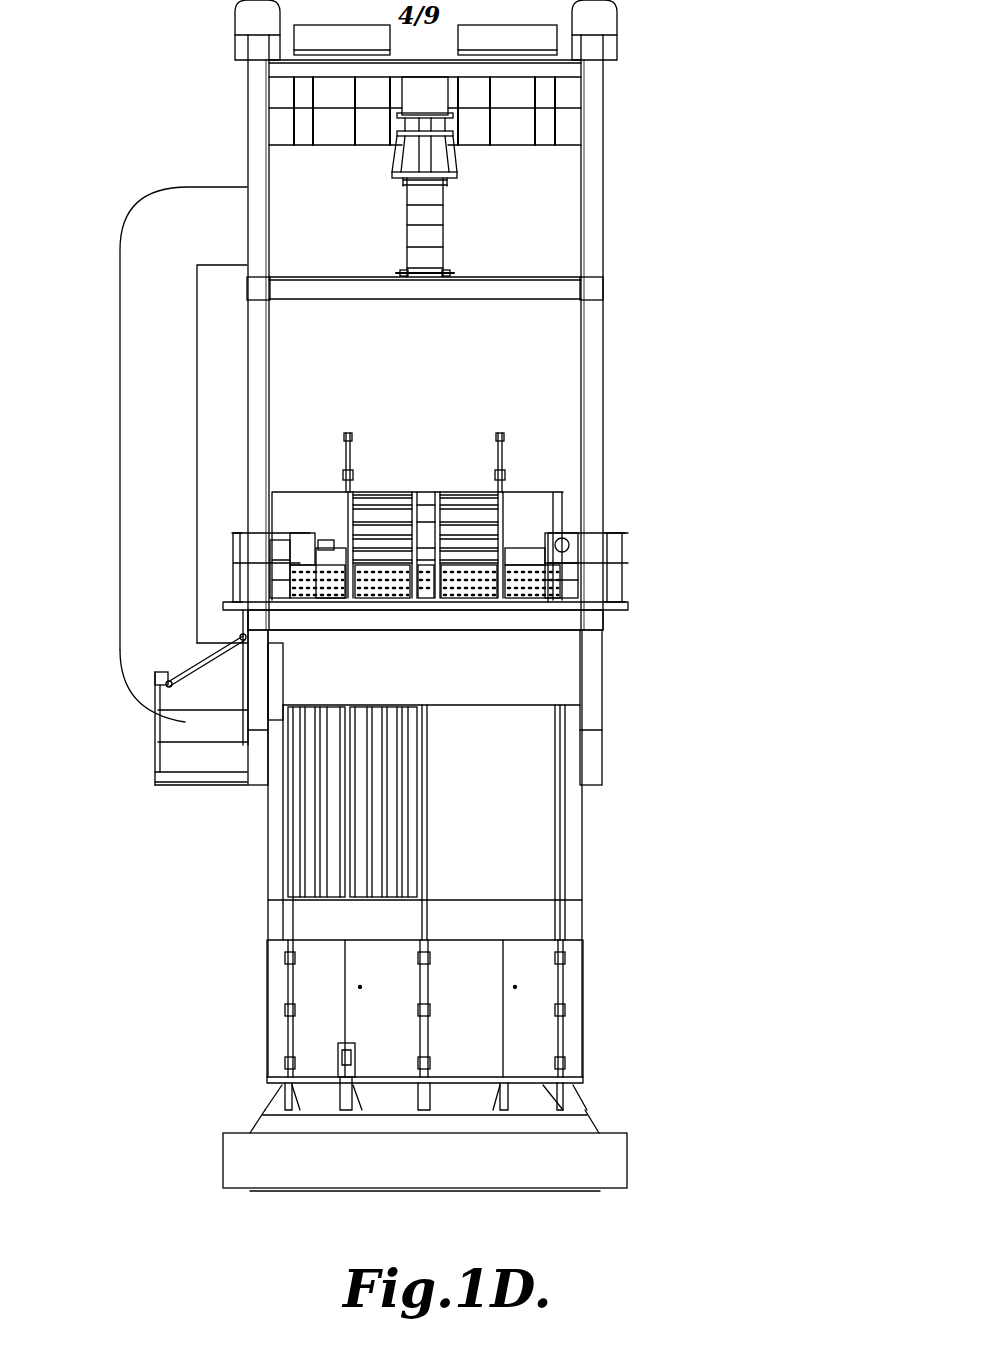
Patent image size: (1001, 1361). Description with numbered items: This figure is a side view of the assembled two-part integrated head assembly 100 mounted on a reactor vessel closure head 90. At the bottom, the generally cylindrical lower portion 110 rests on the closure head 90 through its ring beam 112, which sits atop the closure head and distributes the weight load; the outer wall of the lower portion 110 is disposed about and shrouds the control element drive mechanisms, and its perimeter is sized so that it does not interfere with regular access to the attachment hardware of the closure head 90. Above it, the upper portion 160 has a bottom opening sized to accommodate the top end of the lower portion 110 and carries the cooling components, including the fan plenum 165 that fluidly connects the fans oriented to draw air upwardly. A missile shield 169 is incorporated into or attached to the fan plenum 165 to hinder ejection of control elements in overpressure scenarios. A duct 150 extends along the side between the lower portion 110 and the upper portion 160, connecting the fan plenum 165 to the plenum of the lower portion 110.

The reactor vessel closure head 90 is at (627, 1159).
The two-part integrated head assembly 100 is at (681, 269).
The lower portion 110 is at (582, 878).
The ring beam 112 is at (583, 1081).
The duct 150 is at (134, 378).
The upper portion 160 is at (602, 390).
The fan plenum 165 is at (548, 223).
The missile shield 169 is at (453, 285).